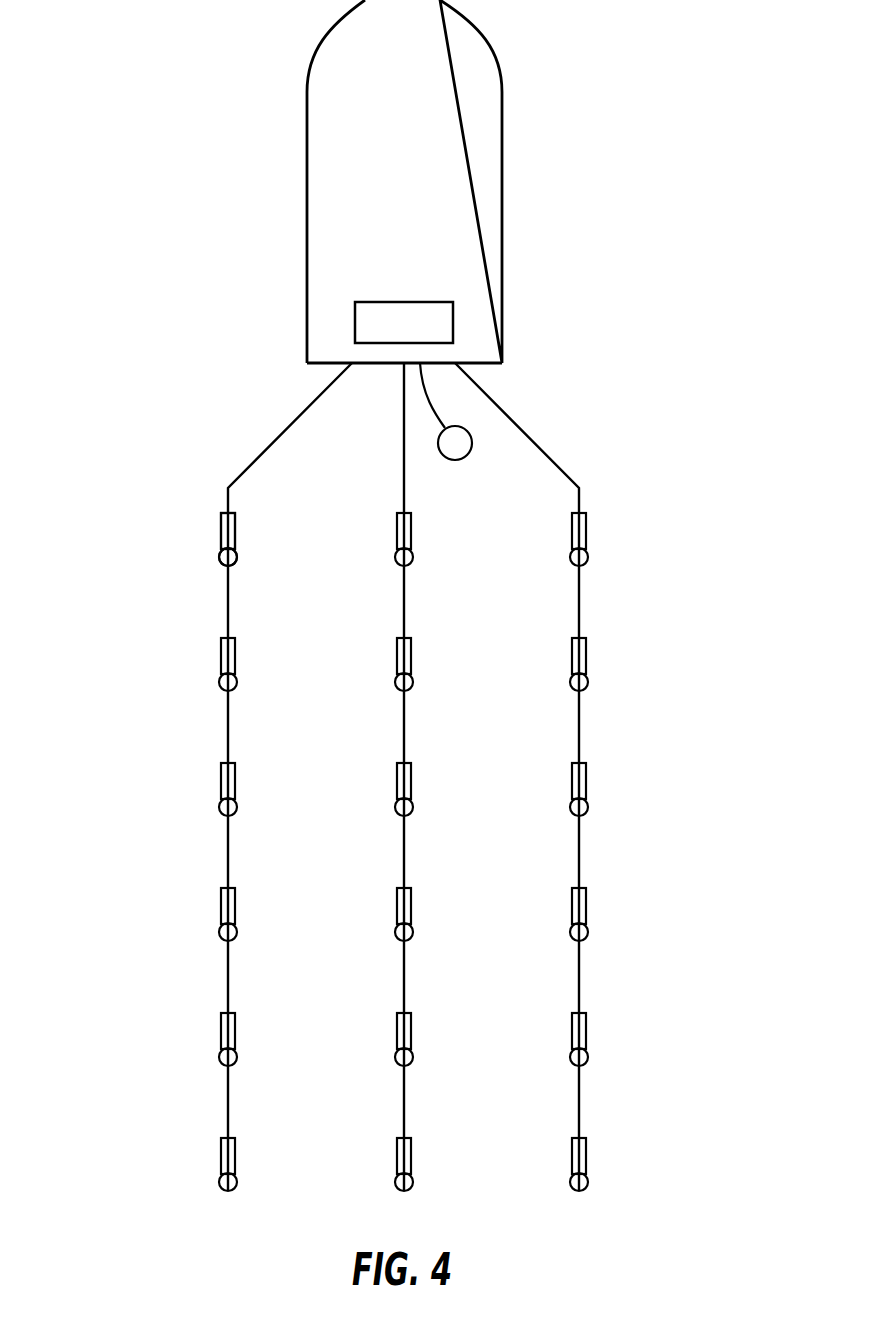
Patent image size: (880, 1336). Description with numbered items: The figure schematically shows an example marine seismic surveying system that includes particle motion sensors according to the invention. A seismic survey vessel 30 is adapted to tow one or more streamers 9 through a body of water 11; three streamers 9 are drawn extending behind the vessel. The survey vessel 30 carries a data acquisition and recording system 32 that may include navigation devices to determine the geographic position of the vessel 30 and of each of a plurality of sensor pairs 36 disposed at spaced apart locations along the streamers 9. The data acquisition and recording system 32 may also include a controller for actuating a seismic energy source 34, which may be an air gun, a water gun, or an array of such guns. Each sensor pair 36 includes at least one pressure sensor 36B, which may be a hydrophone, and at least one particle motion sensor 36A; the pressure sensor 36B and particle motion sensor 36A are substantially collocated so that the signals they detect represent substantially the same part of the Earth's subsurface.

The seismic survey vessel 30 is at (502, 208).
The data acquisition and recording system 32 is at (405, 302).
The seismic energy source 34 is at (462, 457).
The streamer 9 is at (287, 428).
The sensor pair 36 is at (102, 503).
The particle motion sensor 36A is at (221, 532).
The pressure sensor 36B is at (219, 557).
The body of water 11 is at (406, 777).